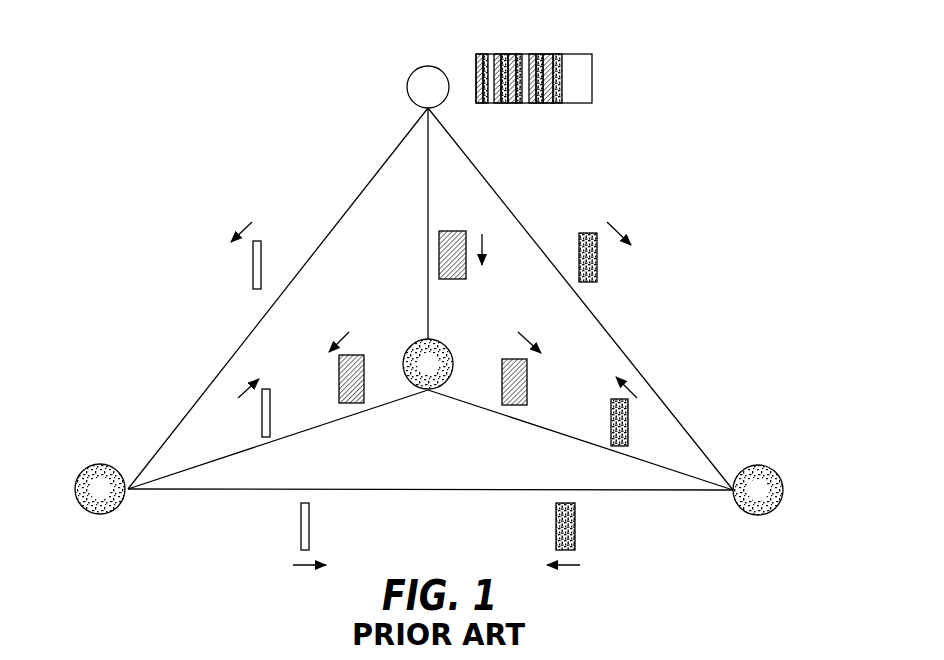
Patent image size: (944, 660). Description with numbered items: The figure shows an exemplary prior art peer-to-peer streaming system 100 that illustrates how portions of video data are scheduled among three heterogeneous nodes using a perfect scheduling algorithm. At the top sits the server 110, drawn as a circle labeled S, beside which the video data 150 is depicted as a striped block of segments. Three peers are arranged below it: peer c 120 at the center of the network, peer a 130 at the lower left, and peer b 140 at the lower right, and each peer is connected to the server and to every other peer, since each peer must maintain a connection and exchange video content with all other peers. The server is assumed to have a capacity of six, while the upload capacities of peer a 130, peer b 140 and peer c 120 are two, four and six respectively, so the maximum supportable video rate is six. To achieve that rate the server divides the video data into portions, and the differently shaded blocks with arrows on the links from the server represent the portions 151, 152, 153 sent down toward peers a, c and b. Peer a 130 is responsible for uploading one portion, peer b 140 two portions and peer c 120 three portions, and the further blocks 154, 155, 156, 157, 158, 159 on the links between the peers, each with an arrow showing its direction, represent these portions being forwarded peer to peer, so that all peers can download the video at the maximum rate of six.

The system 100 is at (180, 41).
The server 110 is at (381, 98).
The peer c 120 is at (452, 361).
The peer a 130 is at (102, 465).
The peer b 140 is at (778, 467).
The video data 150 is at (575, 77).
The video data portion 151 is at (269, 241).
The video data portion 152 is at (455, 279).
The video data portion 153 is at (590, 282).
The video data portion 154 is at (270, 415).
The video data portion 155 is at (366, 366).
The video data portion 156 is at (527, 395).
The video data portion 157 is at (628, 415).
The video data portion 158 is at (309, 528).
The video data portion 159 is at (575, 530).